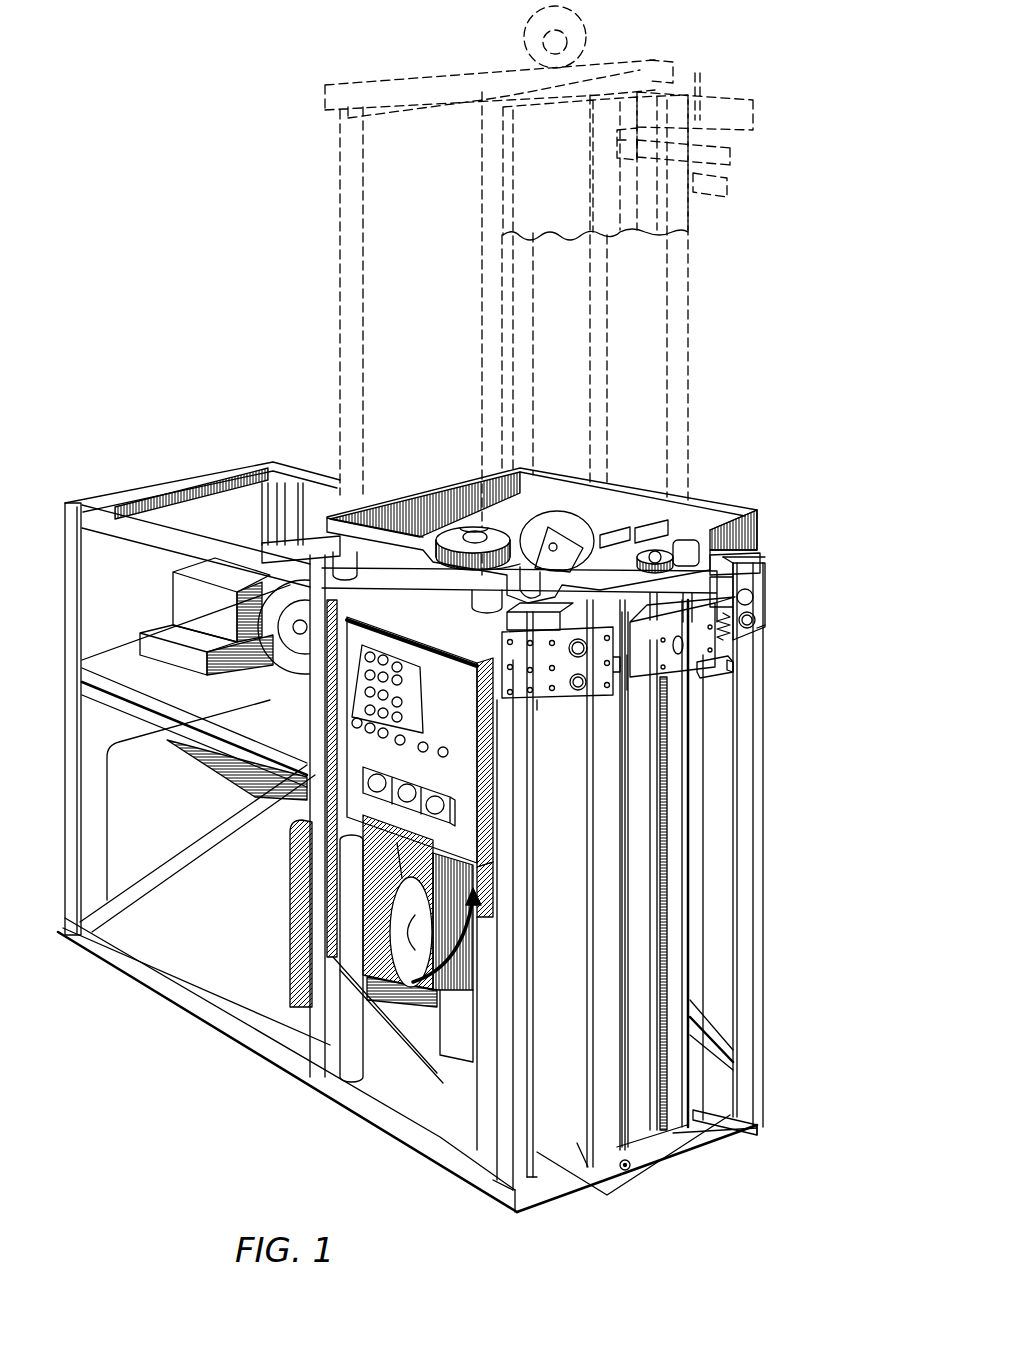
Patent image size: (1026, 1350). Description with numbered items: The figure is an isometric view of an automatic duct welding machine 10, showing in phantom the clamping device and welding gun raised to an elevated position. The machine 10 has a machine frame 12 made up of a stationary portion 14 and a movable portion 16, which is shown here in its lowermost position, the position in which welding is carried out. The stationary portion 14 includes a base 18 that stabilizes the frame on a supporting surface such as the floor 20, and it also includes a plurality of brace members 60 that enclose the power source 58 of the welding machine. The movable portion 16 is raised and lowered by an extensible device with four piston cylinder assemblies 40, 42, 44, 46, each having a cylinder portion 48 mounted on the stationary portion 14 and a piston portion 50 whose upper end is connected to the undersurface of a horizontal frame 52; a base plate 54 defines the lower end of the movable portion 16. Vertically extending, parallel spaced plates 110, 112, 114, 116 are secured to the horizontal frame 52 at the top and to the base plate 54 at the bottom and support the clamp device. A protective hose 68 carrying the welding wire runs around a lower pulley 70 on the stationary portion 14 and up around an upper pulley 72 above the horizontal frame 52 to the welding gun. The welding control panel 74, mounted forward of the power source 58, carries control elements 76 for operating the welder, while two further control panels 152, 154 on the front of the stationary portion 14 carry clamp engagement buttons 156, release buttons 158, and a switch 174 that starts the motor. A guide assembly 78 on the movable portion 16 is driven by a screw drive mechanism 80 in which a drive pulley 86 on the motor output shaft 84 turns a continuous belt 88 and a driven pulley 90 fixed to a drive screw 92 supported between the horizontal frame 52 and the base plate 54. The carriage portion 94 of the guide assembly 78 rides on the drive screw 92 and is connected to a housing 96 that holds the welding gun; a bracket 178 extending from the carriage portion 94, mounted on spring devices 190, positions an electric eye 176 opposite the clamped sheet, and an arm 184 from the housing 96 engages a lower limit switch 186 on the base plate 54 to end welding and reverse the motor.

The automatic duct welding machine 10 is at (213, 380).
The machine frame 12 is at (162, 1021).
The stationary portion 14 is at (165, 487).
The movable portion 16 is at (765, 116).
The base 18 is at (433, 1160).
The floor 20 is at (189, 1117).
The piston cylinder assembly 40 is at (475, 600).
The piston cylinder assembly 42 is at (690, 535).
The piston cylinder assembly 44 is at (270, 572).
The piston cylinder assembly 46 is at (530, 507).
The cylinder portion 48 is at (333, 1077).
The piston portion 50 is at (340, 270).
The horizontal frame 52 is at (433, 132).
The base plate 54 is at (633, 1187).
The power source 58 is at (150, 733).
The brace members 60 is at (260, 508).
The protective conduit or hose 68 is at (297, 867).
The lower pulley 70 is at (403, 973).
The upper pulley 72 is at (566, 511).
The welding control panel 74 is at (345, 700).
The control elements 76 is at (458, 817).
The guide assembly 78 is at (788, 632).
The screw drive mechanism 80 is at (474, 530).
The output shaft 84 is at (455, 530).
The drive pulley 86 is at (447, 530).
The continuous belt 88 is at (507, 560).
The driven pulley 90 is at (655, 550).
The drive screw 92 is at (667, 817).
The carriage portion 94 is at (750, 563).
The housing 96 is at (680, 655).
The plate 110 is at (577, 1143).
The plate 112 is at (627, 1143).
The plate 114 is at (673, 1133).
The plate 116 is at (747, 1120).
The control panel 152 is at (537, 700).
The control panel 154 is at (763, 630).
The clamp engagement button 156 is at (577, 657).
The button 158 is at (578, 690).
The switch 174 is at (530, 667).
The electric eye 176 is at (703, 673).
The bracket 178 is at (727, 670).
The arm 184 is at (627, 672).
The lower limit switch 186 is at (625, 1172).
The spring devices 190 is at (730, 623).